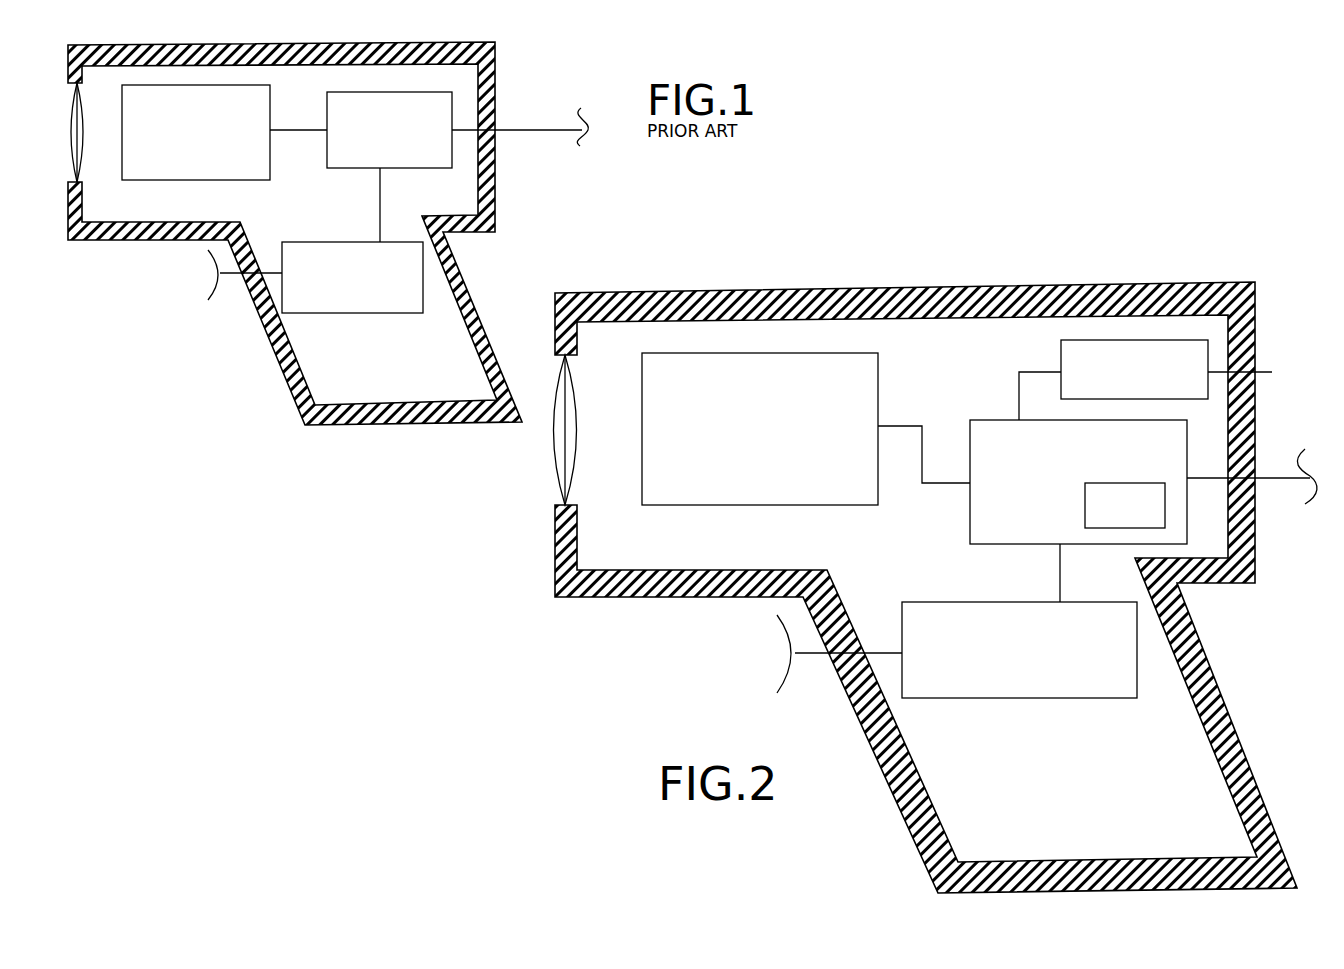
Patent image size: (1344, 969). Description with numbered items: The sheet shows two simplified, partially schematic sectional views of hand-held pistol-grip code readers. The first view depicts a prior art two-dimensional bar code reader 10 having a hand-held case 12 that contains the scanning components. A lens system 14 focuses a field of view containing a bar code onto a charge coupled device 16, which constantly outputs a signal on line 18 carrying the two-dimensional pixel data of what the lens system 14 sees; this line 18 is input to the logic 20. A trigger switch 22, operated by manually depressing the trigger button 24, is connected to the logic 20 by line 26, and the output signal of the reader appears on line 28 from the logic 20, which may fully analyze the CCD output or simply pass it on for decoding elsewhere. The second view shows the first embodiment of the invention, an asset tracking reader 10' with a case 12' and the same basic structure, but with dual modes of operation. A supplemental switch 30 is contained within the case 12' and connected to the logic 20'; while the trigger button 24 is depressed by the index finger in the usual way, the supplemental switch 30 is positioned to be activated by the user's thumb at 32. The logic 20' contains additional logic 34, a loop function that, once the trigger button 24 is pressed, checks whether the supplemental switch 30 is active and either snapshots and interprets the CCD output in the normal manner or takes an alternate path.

In FIG. 1, the bar code reader 10 is at (345, 233).
In FIG. 1, the hand-held case 12 is at (309, 233).
In FIG. 1, the lens system 14 is at (82, 183).
In FIG. 2, the lens system 14 is at (552, 465).
In FIG. 1, the charge coupled device (CCD) 16 is at (222, 180).
In FIG. 2, the charge coupled device (CCD) 16 is at (758, 505).
In FIG. 1, the line 18 is at (295, 130).
In FIG. 2, the line 18 is at (924, 440).
In FIG. 1, the logic 20 is at (393, 148).
In FIG. 1, the trigger switch 22 is at (345, 314).
In FIG. 2, the trigger switch 22 is at (1017, 698).
In FIG. 1, the trigger button 24 is at (218, 283).
In FIG. 2, the trigger button 24 is at (795, 662).
In FIG. 1, the line 26 is at (380, 222).
In FIG. 2, the line 26 is at (1060, 578).
In FIG. 1, the line 28 is at (533, 130).
In FIG. 2, the line 28 is at (1273, 480).
In FIG. 2, the asset tracking reader 10' is at (909, 525).
In FIG. 2, the case 12' is at (926, 556).
In FIG. 2, the logic 20' is at (1050, 490).
In FIG. 2, the supplemental switch 30 is at (1165, 338).
In FIG. 2, the thumb activation location 32 is at (1282, 395).
In FIG. 2, the additional logic 34 is at (1113, 483).